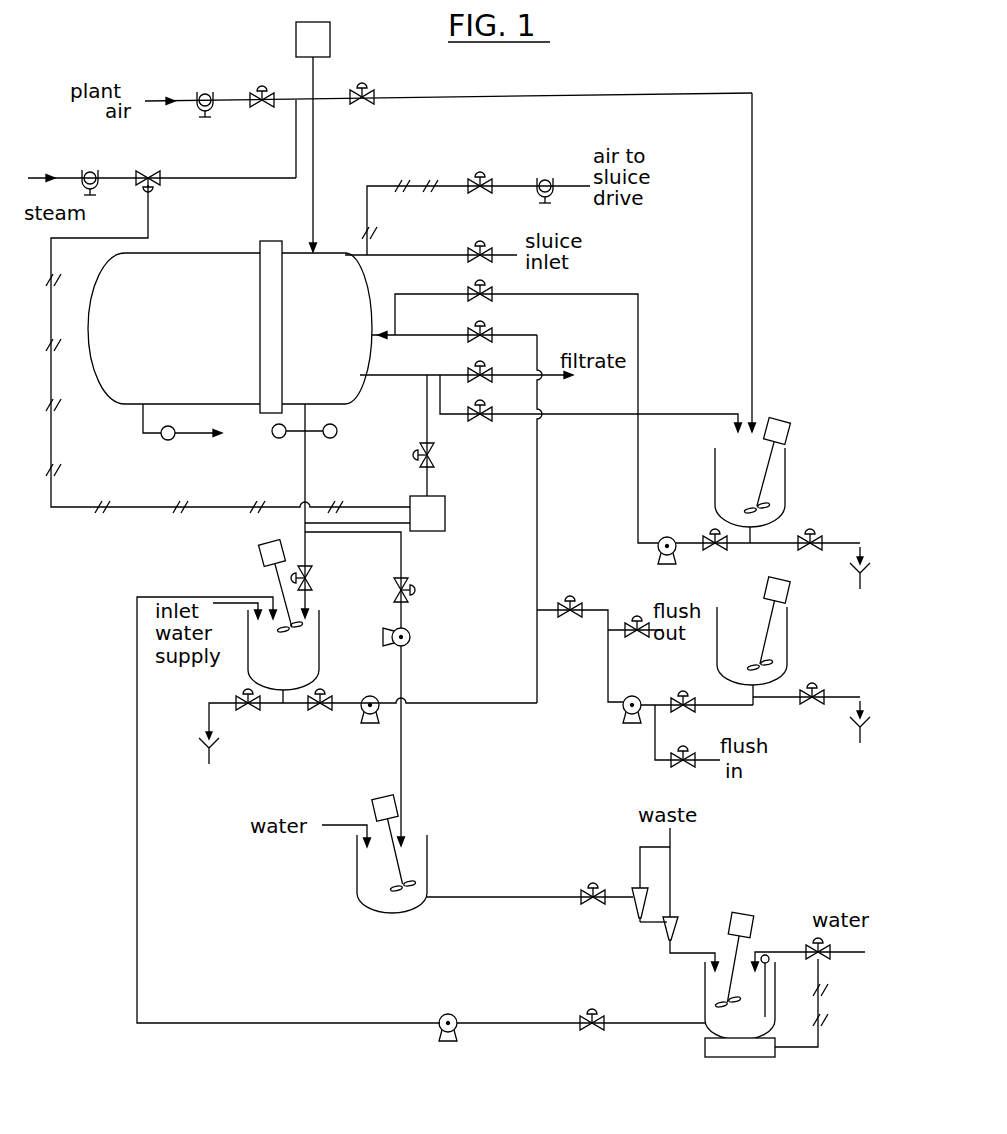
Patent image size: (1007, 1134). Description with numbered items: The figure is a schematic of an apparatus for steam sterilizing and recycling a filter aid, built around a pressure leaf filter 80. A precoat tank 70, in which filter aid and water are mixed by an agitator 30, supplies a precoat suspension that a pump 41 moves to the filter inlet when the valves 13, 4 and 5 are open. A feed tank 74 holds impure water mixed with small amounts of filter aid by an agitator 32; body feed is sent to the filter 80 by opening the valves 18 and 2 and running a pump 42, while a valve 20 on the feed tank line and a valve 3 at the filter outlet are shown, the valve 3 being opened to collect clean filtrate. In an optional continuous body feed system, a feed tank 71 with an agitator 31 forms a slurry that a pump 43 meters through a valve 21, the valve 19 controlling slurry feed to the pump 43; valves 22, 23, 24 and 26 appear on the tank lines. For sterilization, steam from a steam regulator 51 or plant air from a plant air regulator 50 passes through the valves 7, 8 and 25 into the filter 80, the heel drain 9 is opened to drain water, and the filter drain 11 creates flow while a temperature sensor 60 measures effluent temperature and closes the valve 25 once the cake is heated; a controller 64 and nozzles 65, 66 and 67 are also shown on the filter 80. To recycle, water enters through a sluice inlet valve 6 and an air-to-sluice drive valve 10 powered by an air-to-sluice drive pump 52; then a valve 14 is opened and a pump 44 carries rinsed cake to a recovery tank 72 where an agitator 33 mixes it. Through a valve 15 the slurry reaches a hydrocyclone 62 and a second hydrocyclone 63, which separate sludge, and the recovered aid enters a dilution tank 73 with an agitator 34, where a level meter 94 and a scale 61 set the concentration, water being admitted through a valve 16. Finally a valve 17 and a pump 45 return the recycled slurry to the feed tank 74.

The valve 2 is at (486, 340).
The filter valve 3 is at (470, 379).
The valve 4 is at (469, 298).
The filtrate outlet valve 5 is at (480, 423).
The sluice inlet valve 6 is at (486, 261).
The air supply valve 7 is at (262, 110).
The air vent valve 8 is at (362, 107).
The heel drain 9 is at (310, 578).
The air-to-sluice drive valve 10 is at (482, 172).
The filter drain 11 is at (407, 456).
The valve 13 is at (711, 553).
The valve 14 is at (386, 591).
The valve 15 is at (595, 881).
The water valve 16 is at (816, 992).
The valve 17 is at (591, 1009).
The valve 18 is at (316, 715).
The valve 19 is at (681, 712).
The drain valve 20 is at (229, 726).
The valve 21 is at (567, 618).
The flush out valve 22 is at (632, 638).
The flush in valve 23 is at (681, 766).
The drain valve 24 is at (834, 546).
The valve 25 is at (159, 189).
The drain valve 26 is at (835, 700).
The agitator 30 is at (781, 458).
The agitator motor 31 is at (764, 624).
The agitator 32 is at (261, 586).
The agitator 33 is at (376, 800).
The agitator motor 34 is at (750, 912).
The pump 41 is at (662, 538).
The pump 42 is at (369, 695).
The pump 43 is at (614, 714).
The pump 44 is at (374, 636).
The pump 45 is at (445, 1015).
The plant air regulator 50 is at (205, 93).
The steam regulator 51 is at (94, 171).
The air-to-sluice drive pump 52 is at (549, 177).
The temperature sensor 60 is at (440, 527).
The scale 61 is at (705, 1050).
The hydrocyclone 62 is at (636, 914).
The second hydrocyclone 63 is at (691, 944).
The controller 64 is at (326, 50).
The drain port 65 is at (182, 435).
The port 66 is at (282, 441).
The port 67 is at (342, 420).
The precoat tank 70 is at (757, 486).
The feed tank 71 is at (758, 643).
The recovery tank 72 is at (357, 857).
The dilution tank 73 is at (705, 972).
The feed tank 74 is at (295, 683).
The filter 80 is at (199, 334).
The level meter 94 is at (776, 970).